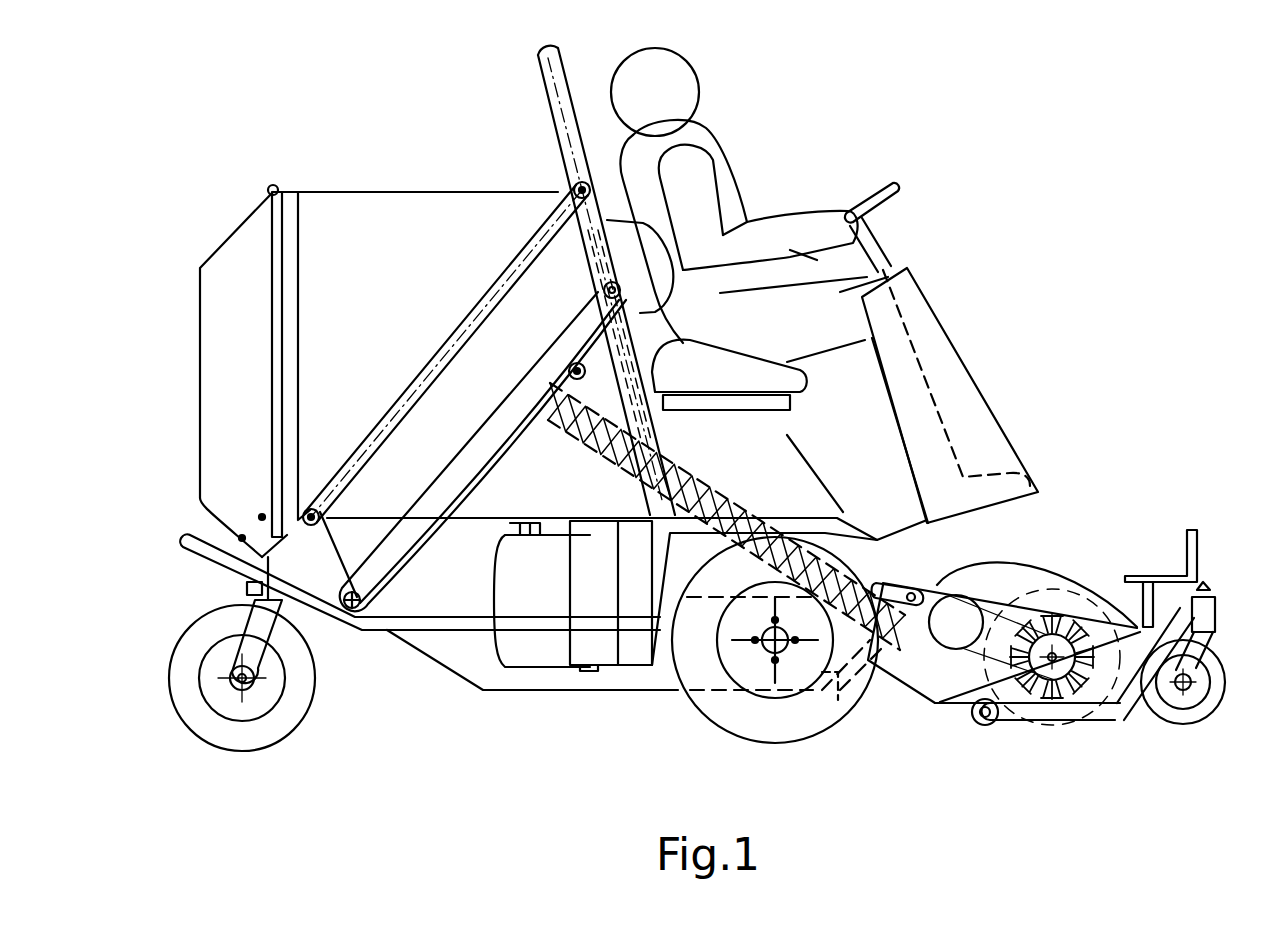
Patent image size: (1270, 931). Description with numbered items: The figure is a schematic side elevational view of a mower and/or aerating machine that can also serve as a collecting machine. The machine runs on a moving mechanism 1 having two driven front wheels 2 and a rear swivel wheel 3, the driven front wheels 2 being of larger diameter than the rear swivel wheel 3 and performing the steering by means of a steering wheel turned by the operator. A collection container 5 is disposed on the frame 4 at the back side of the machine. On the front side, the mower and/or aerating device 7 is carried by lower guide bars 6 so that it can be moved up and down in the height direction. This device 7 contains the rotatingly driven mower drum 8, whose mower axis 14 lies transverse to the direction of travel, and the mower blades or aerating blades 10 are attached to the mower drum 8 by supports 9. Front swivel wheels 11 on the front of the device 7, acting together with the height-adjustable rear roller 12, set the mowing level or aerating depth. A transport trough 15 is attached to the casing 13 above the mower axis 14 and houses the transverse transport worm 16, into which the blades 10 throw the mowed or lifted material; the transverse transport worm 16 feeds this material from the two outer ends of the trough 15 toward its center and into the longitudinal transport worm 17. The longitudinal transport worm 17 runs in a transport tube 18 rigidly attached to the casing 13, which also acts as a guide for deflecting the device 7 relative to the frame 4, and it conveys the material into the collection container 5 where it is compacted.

The moving mechanism 1 is at (660, 709).
The driven front wheels 2 is at (820, 702).
The rear swivel wheel 3 is at (282, 724).
The frame 4 is at (550, 675).
The collection container 5 is at (450, 225).
The lower guide bars 6 is at (918, 582).
The mower and/or aerating device 7 is at (1070, 550).
The mower drum 8 is at (1030, 715).
The supports 9 is at (1012, 705).
The mower blades or aerating blades 10 is at (1085, 712).
The front swivel wheels 11 is at (1192, 724).
The rear roller 12 is at (985, 722).
The casing 13 is at (1118, 716).
The mower axis 14 is at (1083, 582).
The transport trough 15 is at (965, 670).
The transverse transport worm 16 is at (979, 585).
The longitudinal transport worm 17 is at (886, 578).
The transport tube 18 is at (897, 700).